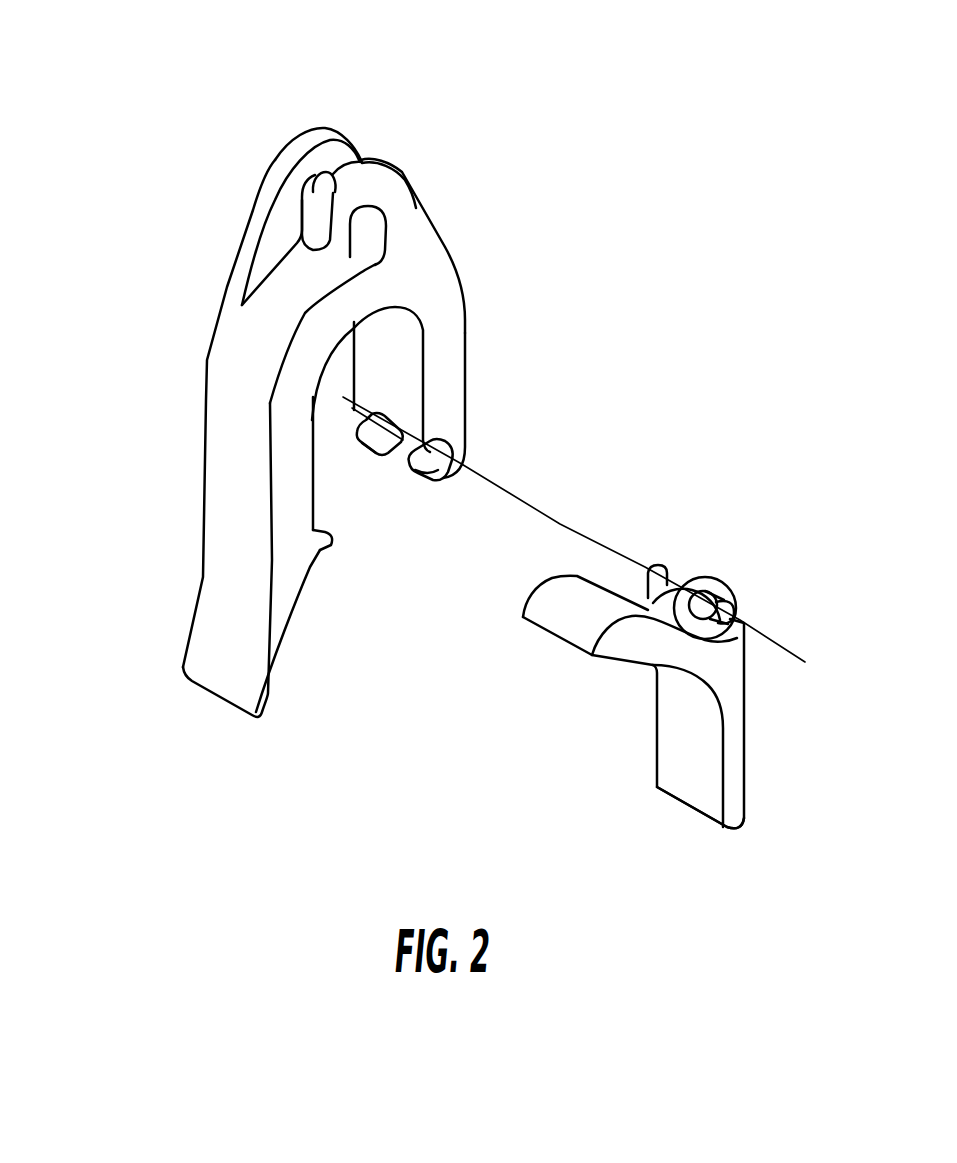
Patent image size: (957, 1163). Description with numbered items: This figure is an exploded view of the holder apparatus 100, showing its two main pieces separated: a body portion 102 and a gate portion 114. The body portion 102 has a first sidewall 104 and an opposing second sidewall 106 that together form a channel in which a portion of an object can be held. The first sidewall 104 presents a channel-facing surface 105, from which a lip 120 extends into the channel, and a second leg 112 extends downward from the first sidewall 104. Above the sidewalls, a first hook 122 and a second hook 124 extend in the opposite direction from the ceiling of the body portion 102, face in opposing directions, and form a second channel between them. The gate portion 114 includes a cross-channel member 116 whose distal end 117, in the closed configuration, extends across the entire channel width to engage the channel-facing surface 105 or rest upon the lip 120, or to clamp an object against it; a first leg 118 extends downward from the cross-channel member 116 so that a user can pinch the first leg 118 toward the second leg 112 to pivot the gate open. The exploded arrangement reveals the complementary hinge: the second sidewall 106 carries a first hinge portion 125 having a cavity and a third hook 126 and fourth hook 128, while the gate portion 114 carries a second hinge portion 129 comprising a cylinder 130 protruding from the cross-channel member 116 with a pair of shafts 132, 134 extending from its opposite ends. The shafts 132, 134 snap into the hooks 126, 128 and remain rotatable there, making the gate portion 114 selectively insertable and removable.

The holder apparatus 100 is at (457, 476).
The body portion 102 is at (432, 417).
The first sidewall 104 is at (226, 458).
The channel-facing surface 105 is at (353, 408).
The second sidewall 106 is at (445, 382).
The second leg 112 is at (243, 639).
The gate portion 114 is at (675, 693).
The cross-channel member 116 is at (645, 650).
The distal end 117 is at (557, 640).
The first leg 118 is at (682, 752).
The lip 120 is at (321, 556).
The first hook 122 is at (294, 134).
The second hook 124 is at (358, 168).
The first hinge portion 125 is at (449, 494).
The third hook 126 is at (378, 448).
The fourth hook 128 is at (423, 478).
The second hinge portion 129 is at (748, 589).
The cylinder 130 is at (690, 562).
The shaft 132 is at (660, 556).
The shaft 134 is at (730, 581).